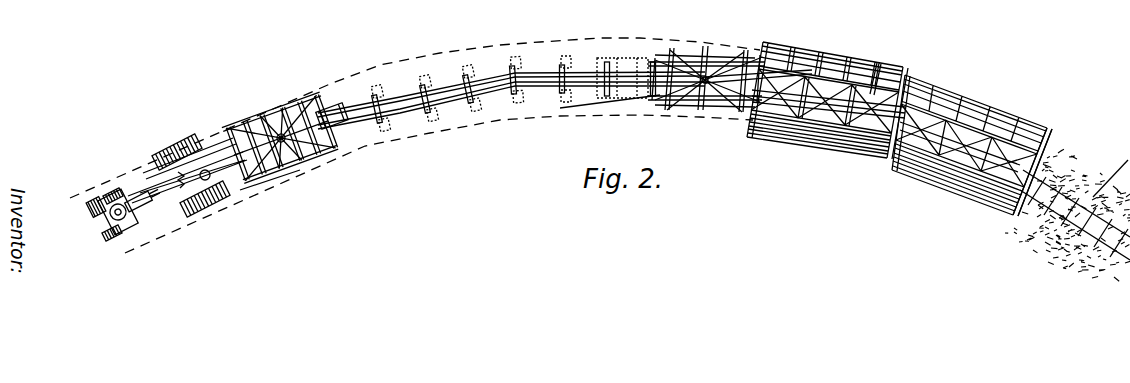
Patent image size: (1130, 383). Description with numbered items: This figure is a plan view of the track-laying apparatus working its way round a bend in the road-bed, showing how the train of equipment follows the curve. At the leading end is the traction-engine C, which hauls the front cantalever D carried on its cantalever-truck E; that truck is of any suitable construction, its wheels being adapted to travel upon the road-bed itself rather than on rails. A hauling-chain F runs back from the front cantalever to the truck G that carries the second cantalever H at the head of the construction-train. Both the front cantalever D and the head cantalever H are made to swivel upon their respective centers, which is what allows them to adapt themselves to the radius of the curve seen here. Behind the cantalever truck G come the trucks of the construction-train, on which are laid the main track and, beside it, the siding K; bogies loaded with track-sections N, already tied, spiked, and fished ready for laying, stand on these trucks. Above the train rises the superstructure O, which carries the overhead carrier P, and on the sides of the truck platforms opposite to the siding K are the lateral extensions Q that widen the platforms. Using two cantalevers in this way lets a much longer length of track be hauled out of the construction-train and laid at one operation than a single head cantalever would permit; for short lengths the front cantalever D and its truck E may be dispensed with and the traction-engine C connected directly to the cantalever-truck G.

The traction-engine C is at (169, 204).
The front cantalever D is at (324, 124).
The cantalever-truck E is at (307, 167).
The hauling-chain F is at (500, 128).
The truck of the cantalever G is at (717, 105).
The cantalever H is at (618, 68).
The siding K is at (782, 53).
The track-sections N is at (830, 87).
The superstructure O is at (869, 84).
The overhead carrier P is at (361, 122).
The lateral extensions Q is at (778, 135).